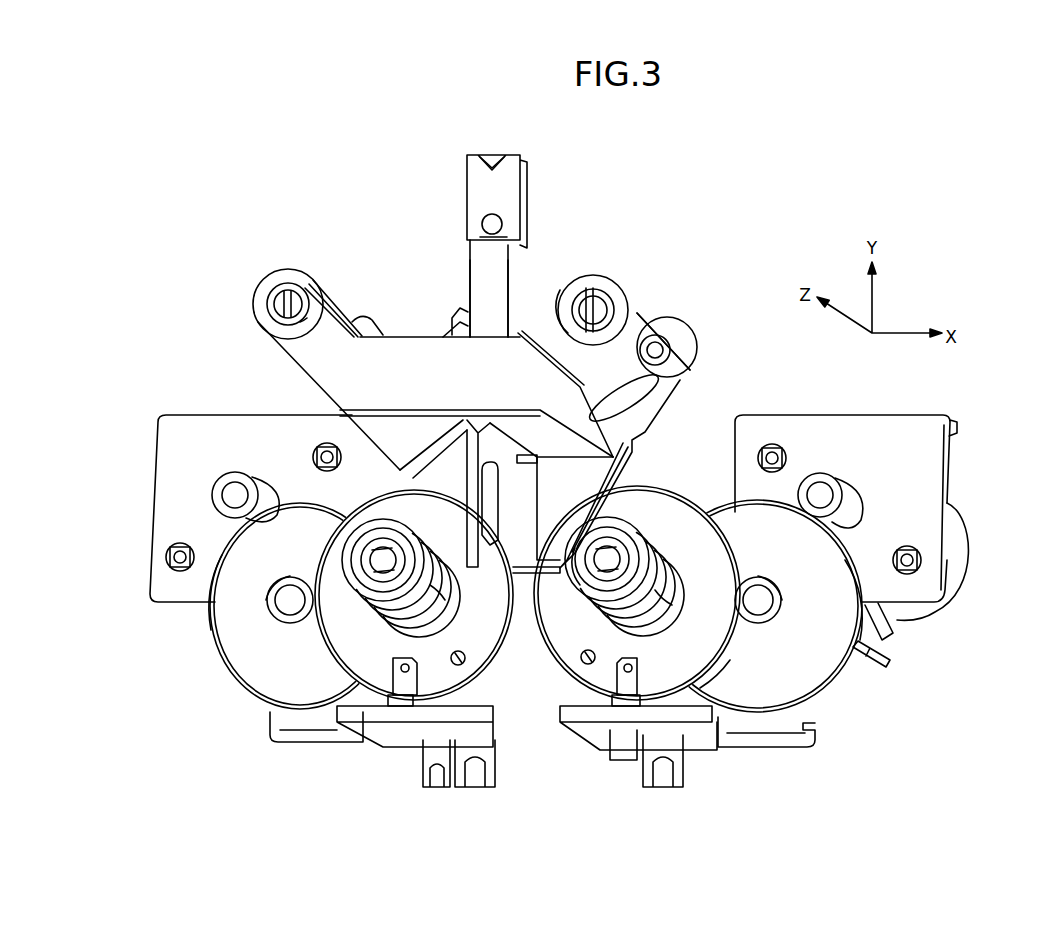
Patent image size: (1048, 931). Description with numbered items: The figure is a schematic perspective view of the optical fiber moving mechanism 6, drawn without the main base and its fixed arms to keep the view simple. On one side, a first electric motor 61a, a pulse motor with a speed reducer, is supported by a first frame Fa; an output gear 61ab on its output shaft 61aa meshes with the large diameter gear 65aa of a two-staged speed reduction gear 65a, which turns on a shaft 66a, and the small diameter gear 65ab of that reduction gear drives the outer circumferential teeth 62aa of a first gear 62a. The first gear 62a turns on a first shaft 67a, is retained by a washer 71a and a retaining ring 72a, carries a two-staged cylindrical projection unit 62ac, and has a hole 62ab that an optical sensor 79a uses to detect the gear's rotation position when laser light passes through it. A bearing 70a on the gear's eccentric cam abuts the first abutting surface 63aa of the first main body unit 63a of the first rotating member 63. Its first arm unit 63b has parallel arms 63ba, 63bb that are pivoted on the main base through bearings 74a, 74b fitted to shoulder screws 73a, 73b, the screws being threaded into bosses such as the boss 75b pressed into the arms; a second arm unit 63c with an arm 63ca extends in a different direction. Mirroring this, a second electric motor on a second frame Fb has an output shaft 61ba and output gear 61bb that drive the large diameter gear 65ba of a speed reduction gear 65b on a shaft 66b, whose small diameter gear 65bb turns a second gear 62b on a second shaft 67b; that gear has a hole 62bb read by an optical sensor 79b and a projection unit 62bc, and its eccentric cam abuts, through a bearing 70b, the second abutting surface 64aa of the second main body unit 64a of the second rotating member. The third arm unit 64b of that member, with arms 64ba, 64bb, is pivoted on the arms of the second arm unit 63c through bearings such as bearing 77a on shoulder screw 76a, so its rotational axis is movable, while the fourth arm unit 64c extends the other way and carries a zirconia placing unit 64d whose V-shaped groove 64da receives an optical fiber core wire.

The optical fiber moving mechanism 6 is at (791, 246).
The first electric motor 61a is at (965, 542).
The output shaft 61aa is at (817, 488).
The output gear 61ab is at (857, 497).
The output shaft 61ba is at (240, 488).
The output gear 61bb is at (218, 478).
The first gear 62a is at (693, 694).
The outer circumferential teeth 62aa is at (723, 655).
The hole 62ab is at (602, 648).
The projection unit 62ac is at (672, 597).
The second gear 62b is at (334, 668).
The hole 62bb is at (462, 655).
The projection unit 62bc is at (448, 592).
The first rotating member 63 is at (610, 589).
The first main body unit 63a is at (552, 537).
The first abutting surface 63aa is at (612, 497).
The first arm unit 63b is at (648, 295).
The arm 63ba is at (636, 303).
The arm 63bb is at (632, 253).
The second arm unit 63c is at (287, 268).
The arm 63ca is at (268, 274).
The second main body unit 64a is at (476, 419).
The second abutting surface 64aa is at (418, 530).
The third arm unit 64b is at (355, 258).
The arm 64ba is at (335, 292).
The arm 64bb is at (298, 212).
The fourth arm unit 64c is at (495, 285).
The placing unit 64d is at (530, 220).
The V-shaped groove 64da is at (498, 155).
The speed reduction gear 65a is at (838, 689).
The large diameter gear 65aa is at (850, 670).
The small diameter gear 65ab is at (790, 603).
The speed reduction gear 65b is at (226, 683).
The large diameter gear 65ba is at (213, 660).
The small diameter gear 65bb is at (280, 607).
The shaft 66a is at (770, 612).
The shaft 66b is at (288, 592).
The first shaft 67a is at (610, 553).
The second shaft 67b is at (378, 557).
The bearing 70a is at (660, 575).
The bearing 70b is at (396, 636).
The washer 71a is at (638, 553).
The retaining ring 72a is at (593, 590).
The shoulder screw 73a is at (578, 298).
The shoulder screw 73b is at (662, 345).
The bearing 74a is at (590, 300).
The bearing 74b is at (695, 362).
The boss 75b is at (624, 397).
The shoulder screw 76a is at (276, 302).
The bearing 77a is at (302, 322).
The optical sensor 79a is at (620, 690).
The optical sensor 79b is at (398, 690).
The first frame Fa is at (900, 413).
The second frame Fb is at (190, 413).